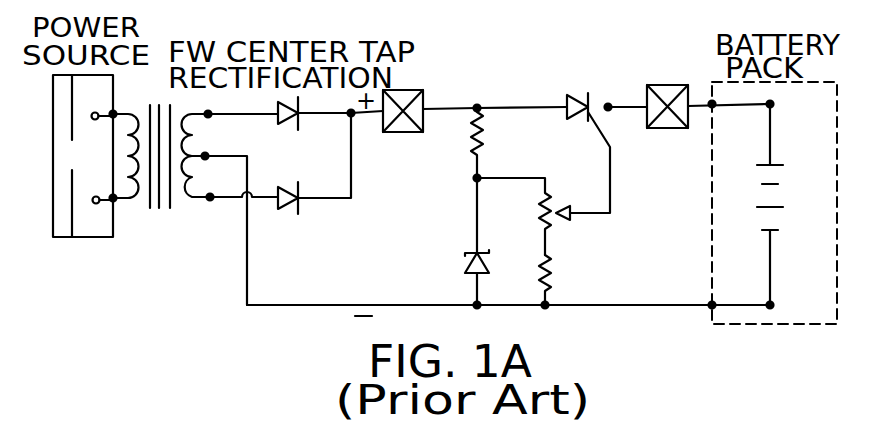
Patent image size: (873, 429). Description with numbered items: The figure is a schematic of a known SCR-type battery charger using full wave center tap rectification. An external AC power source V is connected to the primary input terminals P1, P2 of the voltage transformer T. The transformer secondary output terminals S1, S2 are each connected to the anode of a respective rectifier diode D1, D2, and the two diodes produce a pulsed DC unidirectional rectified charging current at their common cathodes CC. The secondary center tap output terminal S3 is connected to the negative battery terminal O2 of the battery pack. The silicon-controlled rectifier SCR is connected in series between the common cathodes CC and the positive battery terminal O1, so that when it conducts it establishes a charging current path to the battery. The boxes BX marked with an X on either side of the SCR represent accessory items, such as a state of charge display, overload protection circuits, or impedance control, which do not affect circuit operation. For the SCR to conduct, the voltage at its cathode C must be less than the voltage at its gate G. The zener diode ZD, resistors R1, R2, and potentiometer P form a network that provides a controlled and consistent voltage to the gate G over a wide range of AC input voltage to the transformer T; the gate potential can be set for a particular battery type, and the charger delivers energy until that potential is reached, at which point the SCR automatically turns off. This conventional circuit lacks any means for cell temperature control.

The AC power source V is at (83, 156).
The primary input terminal P1 is at (97, 113).
The primary input terminal P2 is at (97, 204).
The voltage transformer T is at (161, 176).
The transformer secondary output terminal S1 is at (210, 116).
The transformer secondary output terminal S2 is at (208, 200).
The transformer secondary center tap output terminal S3 is at (207, 158).
The rectifier diode D1 is at (297, 127).
The rectifier diode D2 is at (300, 212).
The common cathodes CC is at (333, 113).
The accessory box BX is at (410, 132).
The resistor R1 is at (496, 145).
The resistor R2 is at (564, 280).
The zener diode ZD is at (456, 241).
The potentiometer P is at (523, 216).
The silicon-controlled rectifier SCR is at (573, 89).
The gate G is at (587, 118).
The cathode C is at (601, 78).
The positive battery terminal O1 is at (773, 106).
The negative battery terminal O2 is at (773, 303).